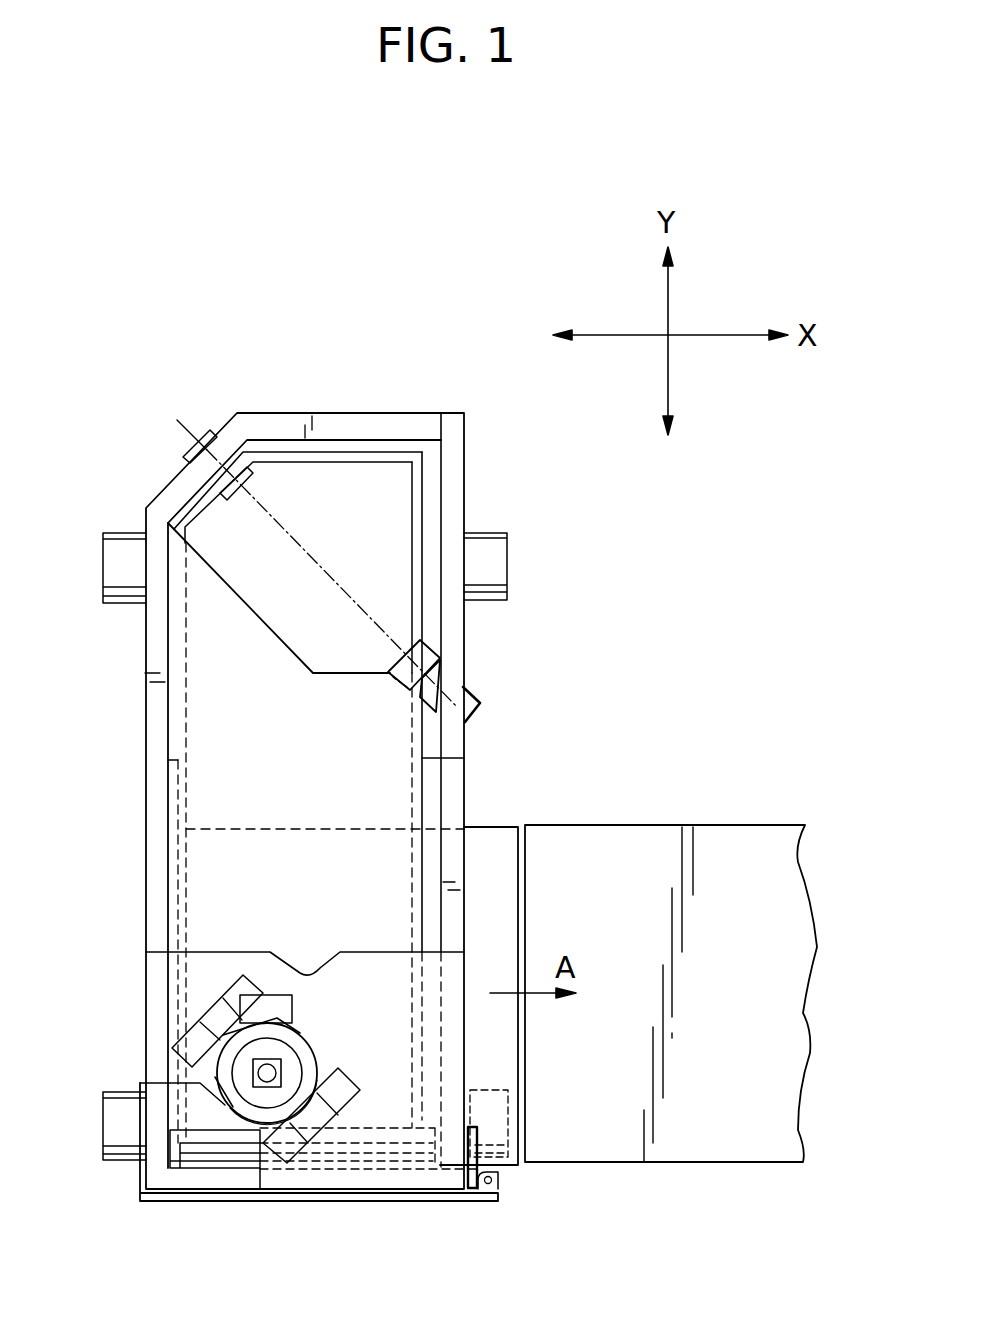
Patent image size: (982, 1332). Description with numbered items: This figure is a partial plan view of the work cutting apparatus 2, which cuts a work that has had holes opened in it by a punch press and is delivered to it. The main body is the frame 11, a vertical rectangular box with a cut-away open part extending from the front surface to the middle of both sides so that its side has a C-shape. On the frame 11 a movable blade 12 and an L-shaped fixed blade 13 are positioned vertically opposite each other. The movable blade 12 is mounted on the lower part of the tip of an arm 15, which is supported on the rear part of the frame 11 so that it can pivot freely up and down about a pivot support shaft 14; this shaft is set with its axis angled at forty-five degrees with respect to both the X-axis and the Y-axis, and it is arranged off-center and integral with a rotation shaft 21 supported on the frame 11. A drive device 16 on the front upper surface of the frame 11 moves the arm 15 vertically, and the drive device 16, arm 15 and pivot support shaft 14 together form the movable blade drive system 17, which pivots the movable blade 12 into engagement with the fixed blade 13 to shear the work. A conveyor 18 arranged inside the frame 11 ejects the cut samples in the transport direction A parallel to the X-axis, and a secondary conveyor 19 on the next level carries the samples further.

The work cutting apparatus 2 is at (88, 478).
The frame 11 is at (145, 775).
The movable blade 12 is at (240, 1155).
The fixed blade 13 is at (193, 1168).
The pivot support shaft 14 is at (357, 602).
The arm 15 is at (460, 753).
The drive device 16 is at (310, 1040).
The movable blade drive system 17 is at (628, 597).
The conveyor 18 is at (503, 885).
The secondary conveyor 19 is at (770, 887).
The rotation shaft 21 is at (202, 437).